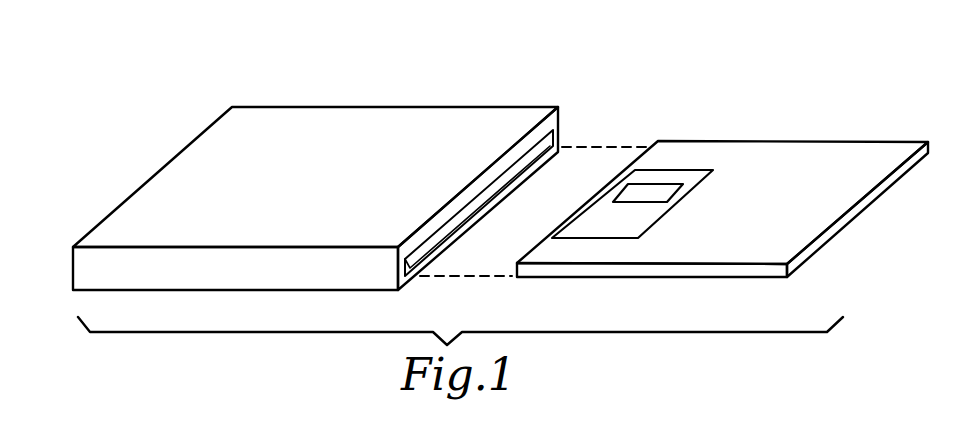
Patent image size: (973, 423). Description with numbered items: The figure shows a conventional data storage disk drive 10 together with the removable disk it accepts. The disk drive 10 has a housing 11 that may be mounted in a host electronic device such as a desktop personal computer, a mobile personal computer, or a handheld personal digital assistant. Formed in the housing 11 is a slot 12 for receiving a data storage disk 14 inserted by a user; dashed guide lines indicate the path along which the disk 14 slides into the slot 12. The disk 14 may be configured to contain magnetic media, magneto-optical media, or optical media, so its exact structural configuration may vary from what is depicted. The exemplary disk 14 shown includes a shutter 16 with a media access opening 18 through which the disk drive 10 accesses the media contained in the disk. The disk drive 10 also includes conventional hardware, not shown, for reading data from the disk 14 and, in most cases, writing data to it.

The data storage disk drive 10 is at (500, 171).
The housing 11 is at (315, 176).
The slot 12 is at (466, 216).
The data storage disk 14 is at (722, 176).
The shutter 16 is at (680, 172).
The media access opening 18 is at (632, 188).